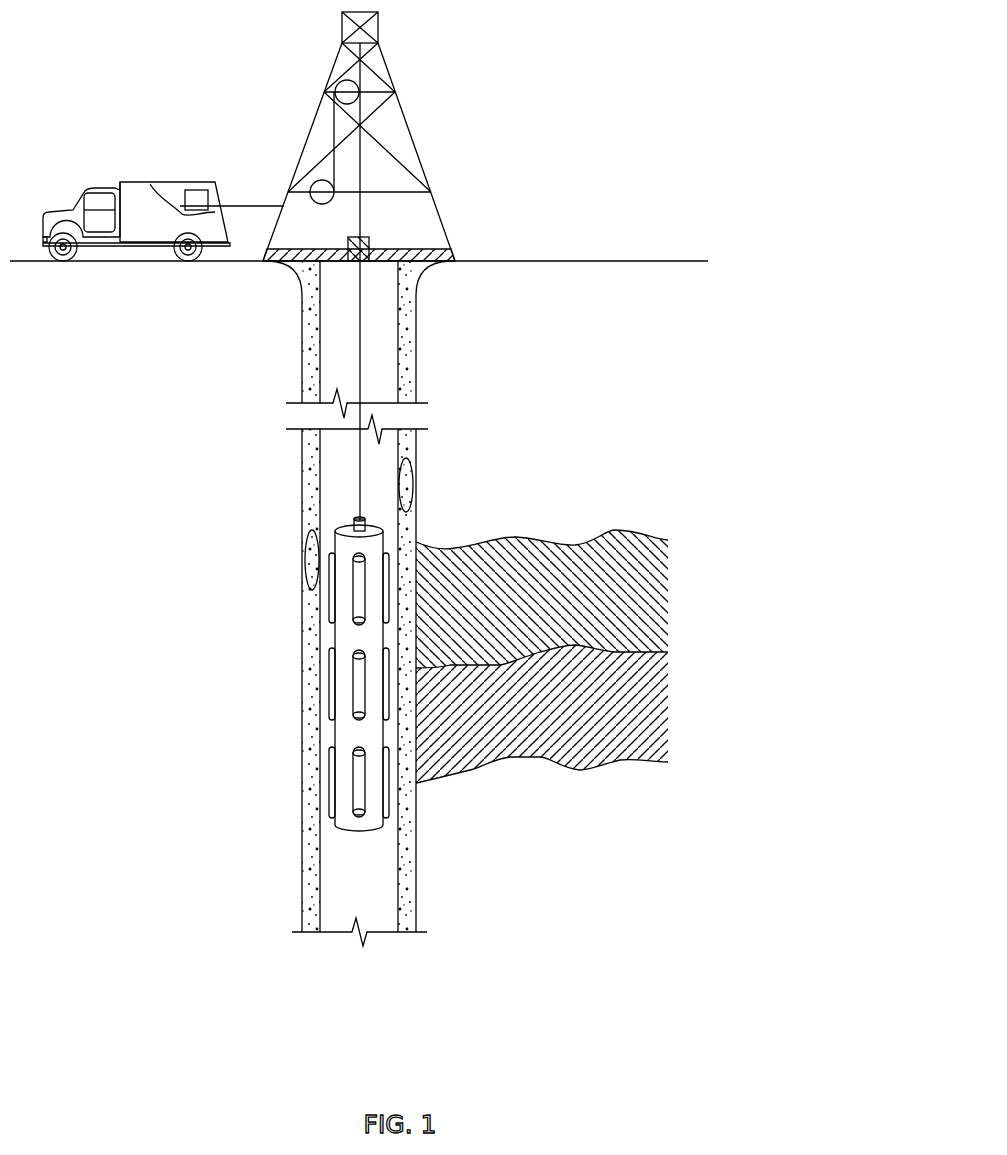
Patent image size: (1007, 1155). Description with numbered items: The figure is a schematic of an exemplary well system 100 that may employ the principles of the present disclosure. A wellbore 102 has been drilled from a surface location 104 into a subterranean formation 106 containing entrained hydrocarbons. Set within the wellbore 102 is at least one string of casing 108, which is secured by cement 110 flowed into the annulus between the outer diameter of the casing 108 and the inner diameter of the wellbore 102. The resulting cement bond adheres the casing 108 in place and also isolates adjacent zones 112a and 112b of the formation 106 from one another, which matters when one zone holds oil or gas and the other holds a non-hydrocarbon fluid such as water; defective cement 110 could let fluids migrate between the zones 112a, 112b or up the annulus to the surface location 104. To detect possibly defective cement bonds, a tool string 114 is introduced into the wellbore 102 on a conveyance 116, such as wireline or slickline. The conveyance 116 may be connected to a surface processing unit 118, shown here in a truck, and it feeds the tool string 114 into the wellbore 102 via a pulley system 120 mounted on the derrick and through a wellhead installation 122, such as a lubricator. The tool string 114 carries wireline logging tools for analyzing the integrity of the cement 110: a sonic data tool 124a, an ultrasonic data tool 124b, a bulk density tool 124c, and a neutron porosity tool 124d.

The well system 100 is at (584, 96).
The wellbore 102 is at (340, 876).
The surface location 104 is at (620, 261).
The subterranean formation 106 is at (593, 625).
The casing 108 is at (398, 914).
The cement 110 is at (311, 937).
The zone 112a is at (518, 606).
The zone 112b is at (518, 719).
The tool string 114 is at (374, 661).
The conveyance 116 is at (361, 455).
The surface processing unit 118 is at (172, 182).
The pulley system 120 is at (345, 91).
The wellhead installation 122 is at (370, 240).
The sonic data tool 124a is at (331, 612).
The ultrasonic data tool 124b is at (331, 710).
The bulk density tool 124c is at (331, 807).
The neutron porosity tool 124d is at (392, 552).